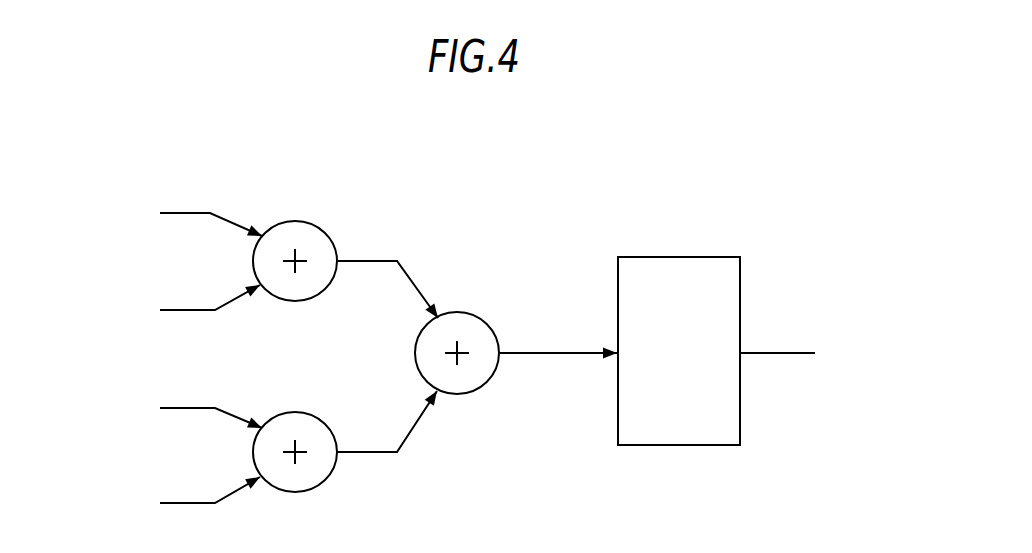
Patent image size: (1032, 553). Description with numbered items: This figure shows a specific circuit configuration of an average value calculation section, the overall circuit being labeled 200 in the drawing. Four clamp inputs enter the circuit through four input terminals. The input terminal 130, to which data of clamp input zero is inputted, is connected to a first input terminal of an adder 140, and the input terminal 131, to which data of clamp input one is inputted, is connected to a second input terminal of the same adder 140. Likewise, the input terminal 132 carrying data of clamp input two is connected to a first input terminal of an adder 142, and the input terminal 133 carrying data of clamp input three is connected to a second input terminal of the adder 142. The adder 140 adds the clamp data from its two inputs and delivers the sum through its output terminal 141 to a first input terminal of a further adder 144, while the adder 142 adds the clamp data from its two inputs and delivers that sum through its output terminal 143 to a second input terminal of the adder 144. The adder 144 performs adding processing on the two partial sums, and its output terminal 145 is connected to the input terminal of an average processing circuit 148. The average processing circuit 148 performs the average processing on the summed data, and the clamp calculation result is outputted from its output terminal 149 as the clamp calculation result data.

The input terminal 130 is at (188, 213).
The input terminal 131 is at (177, 310).
The input terminal 132 is at (188, 408).
The input terminal 133 is at (182, 503).
The adder 140 is at (322, 228).
The output terminal 141 is at (380, 264).
The adder 142 is at (314, 418).
The output terminal 143 is at (412, 433).
The adder 144 is at (487, 323).
The output terminal 145 is at (553, 355).
The average processing circuit 148 is at (677, 257).
The output terminal 149 is at (778, 352).
The clamp calculation circuit 200 is at (794, 151).